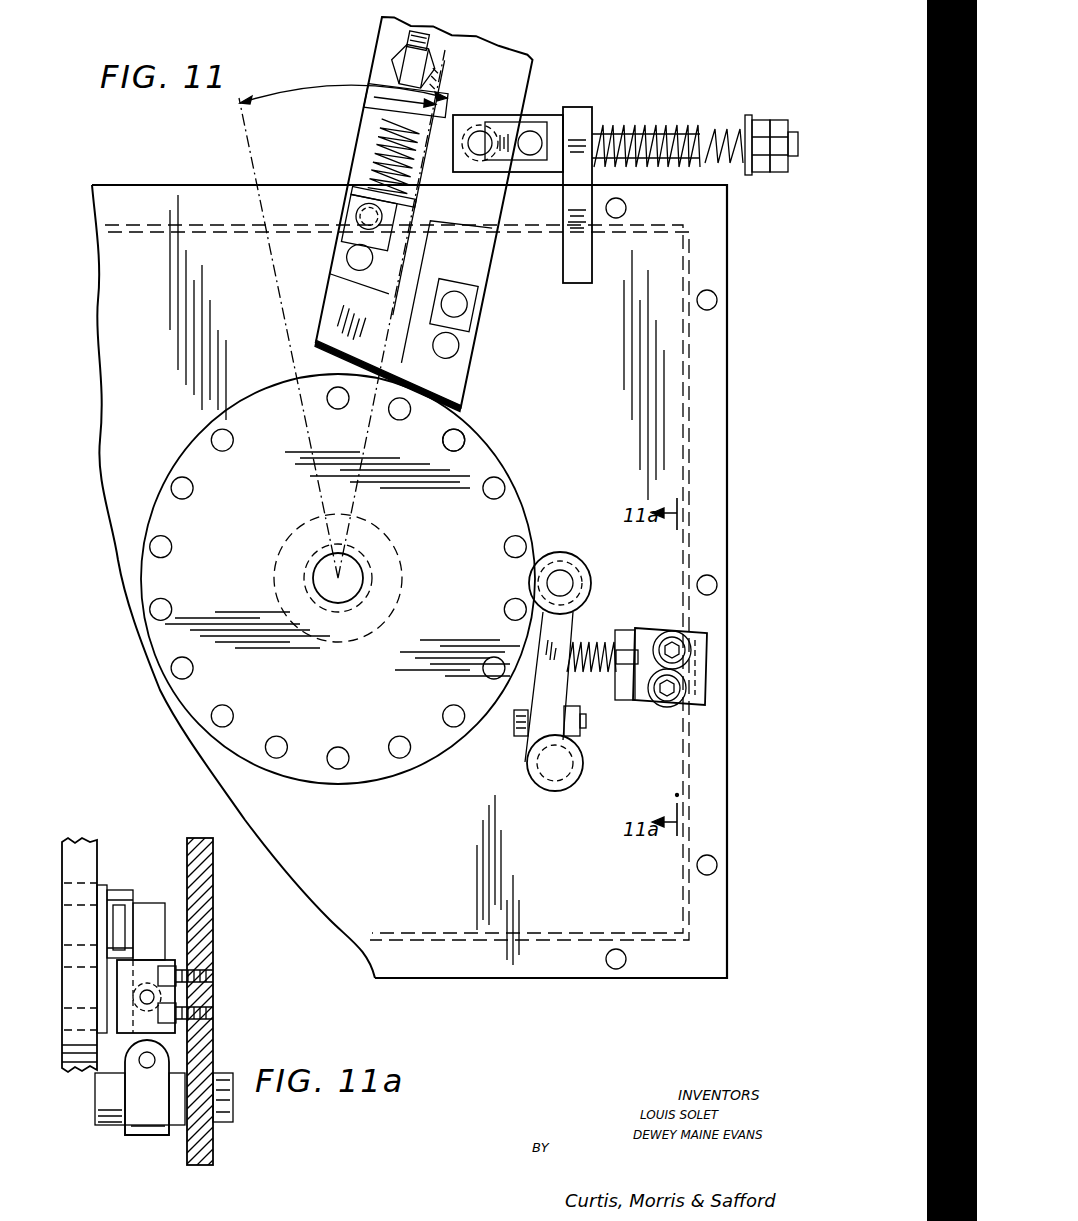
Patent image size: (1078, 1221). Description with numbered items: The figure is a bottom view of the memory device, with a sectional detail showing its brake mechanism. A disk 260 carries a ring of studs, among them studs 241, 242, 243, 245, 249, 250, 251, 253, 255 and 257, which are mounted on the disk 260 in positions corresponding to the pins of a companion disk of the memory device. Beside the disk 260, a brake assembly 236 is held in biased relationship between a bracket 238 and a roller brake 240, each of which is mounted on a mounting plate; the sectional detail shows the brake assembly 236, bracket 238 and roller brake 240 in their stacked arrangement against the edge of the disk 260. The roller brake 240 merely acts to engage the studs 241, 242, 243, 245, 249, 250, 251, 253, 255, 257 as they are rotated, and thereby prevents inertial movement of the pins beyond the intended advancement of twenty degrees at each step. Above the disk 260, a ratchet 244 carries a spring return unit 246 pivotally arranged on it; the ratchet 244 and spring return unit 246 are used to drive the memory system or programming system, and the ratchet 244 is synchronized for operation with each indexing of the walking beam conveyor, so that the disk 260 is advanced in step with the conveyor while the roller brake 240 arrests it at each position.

In FIG. 11, the brake assembly 236 is at (637, 708).
In FIG. 11A, the brake assembly 236 is at (144, 1142).
In FIG. 11, the bracket 238 is at (704, 703).
In FIG. 11, the roller brake 240 is at (580, 600).
In FIG. 11A, the roller brake 240 is at (133, 895).
In FIG. 11, the stud 241 is at (233, 712).
In FIG. 11, the stud 242 is at (193, 673).
In FIG. 11, the stud 243 is at (172, 605).
In FIG. 11, the ratchet 244 is at (483, 290).
In FIG. 11, the stud 245 is at (193, 492).
In FIG. 11, the spring return unit 246 is at (592, 113).
In FIG. 11, the stud 249 is at (398, 420).
In FIG. 11, the stud 250 is at (451, 452).
In FIG. 11, the stud 251 is at (490, 499).
In FIG. 11, the stud 253 is at (504, 612).
In FIG. 11, the stud 255 is at (445, 707).
In FIG. 11, the stud 257 is at (336, 747).
In FIG. 11, the disk 260 is at (387, 783).
In FIG. 11A, the disk 260 is at (70, 850).